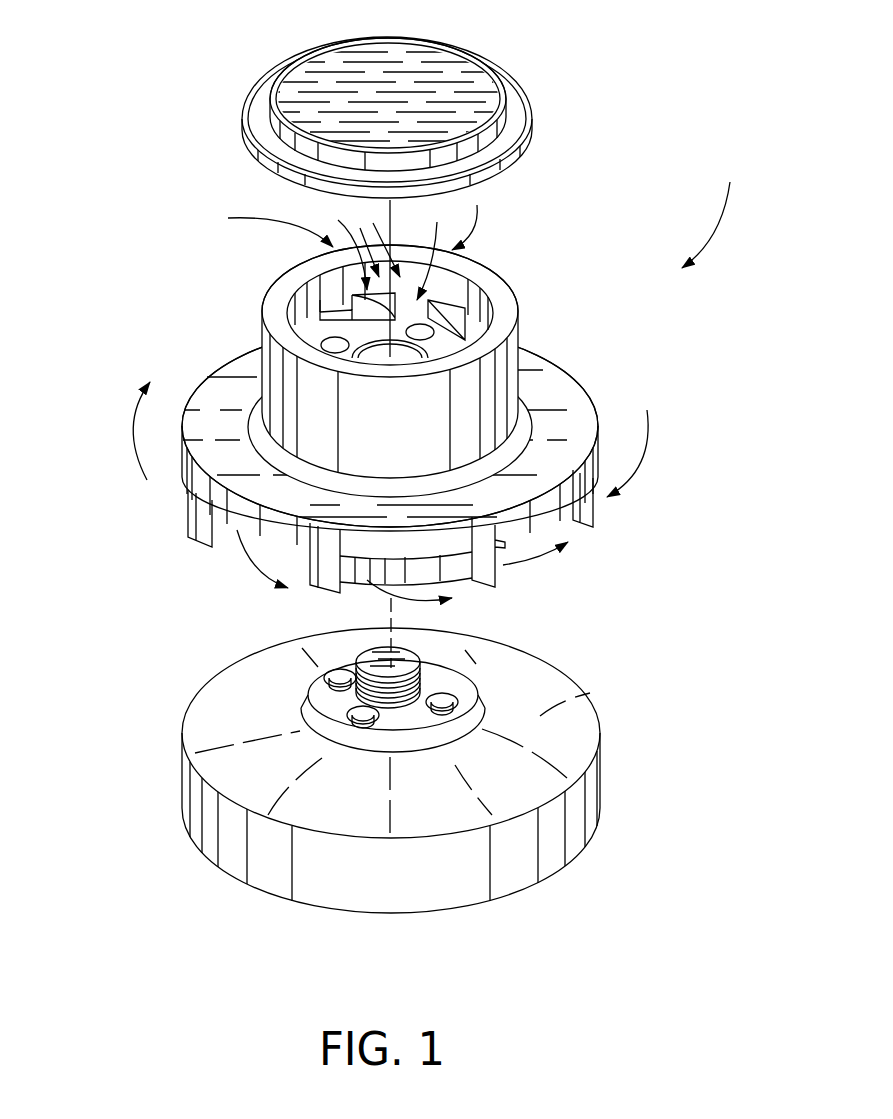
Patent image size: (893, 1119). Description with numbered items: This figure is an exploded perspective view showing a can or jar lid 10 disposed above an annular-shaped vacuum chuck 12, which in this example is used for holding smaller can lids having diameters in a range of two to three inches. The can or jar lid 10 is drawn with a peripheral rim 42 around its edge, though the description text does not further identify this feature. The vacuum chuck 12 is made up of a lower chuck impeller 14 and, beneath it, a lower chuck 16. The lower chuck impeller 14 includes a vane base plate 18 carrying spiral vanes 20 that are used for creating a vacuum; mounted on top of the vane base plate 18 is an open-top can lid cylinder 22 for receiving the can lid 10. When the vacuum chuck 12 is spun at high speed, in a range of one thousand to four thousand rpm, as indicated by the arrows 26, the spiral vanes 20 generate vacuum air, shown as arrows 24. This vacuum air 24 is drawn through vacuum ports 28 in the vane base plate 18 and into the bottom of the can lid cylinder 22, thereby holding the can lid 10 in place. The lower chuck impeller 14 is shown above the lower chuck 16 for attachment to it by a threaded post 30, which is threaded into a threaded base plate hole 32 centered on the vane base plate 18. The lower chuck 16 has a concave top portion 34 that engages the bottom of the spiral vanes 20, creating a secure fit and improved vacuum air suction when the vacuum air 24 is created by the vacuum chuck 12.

The can or jar lid 10 is at (423, 96).
The vacuum chuck 12 is at (715, 208).
The lower chuck impeller 14 is at (568, 392).
The lower chuck 16 is at (572, 722).
The vane base plate 18 is at (578, 410).
The spiral vanes 20 is at (197, 510).
The can lid cylinder 22 is at (500, 290).
The vacuum air 24 is at (583, 578).
The spinning arrows 26 is at (128, 440).
The vacuum ports 28 is at (320, 332).
The threaded post 30 is at (358, 682).
The threaded base plate hole 32 is at (407, 355).
The concave top portion 34 is at (520, 678).
The lid rim 42 is at (268, 130).